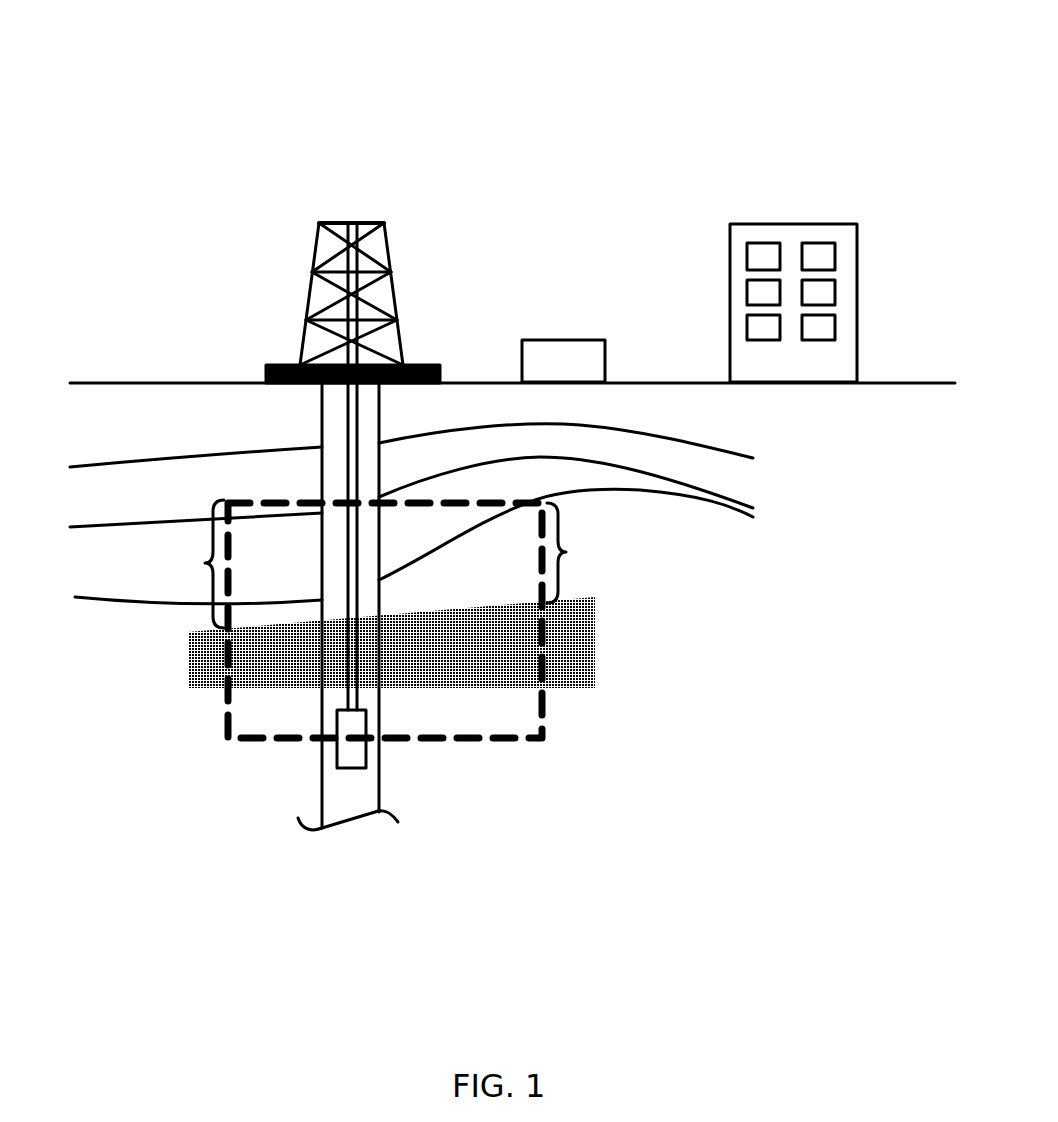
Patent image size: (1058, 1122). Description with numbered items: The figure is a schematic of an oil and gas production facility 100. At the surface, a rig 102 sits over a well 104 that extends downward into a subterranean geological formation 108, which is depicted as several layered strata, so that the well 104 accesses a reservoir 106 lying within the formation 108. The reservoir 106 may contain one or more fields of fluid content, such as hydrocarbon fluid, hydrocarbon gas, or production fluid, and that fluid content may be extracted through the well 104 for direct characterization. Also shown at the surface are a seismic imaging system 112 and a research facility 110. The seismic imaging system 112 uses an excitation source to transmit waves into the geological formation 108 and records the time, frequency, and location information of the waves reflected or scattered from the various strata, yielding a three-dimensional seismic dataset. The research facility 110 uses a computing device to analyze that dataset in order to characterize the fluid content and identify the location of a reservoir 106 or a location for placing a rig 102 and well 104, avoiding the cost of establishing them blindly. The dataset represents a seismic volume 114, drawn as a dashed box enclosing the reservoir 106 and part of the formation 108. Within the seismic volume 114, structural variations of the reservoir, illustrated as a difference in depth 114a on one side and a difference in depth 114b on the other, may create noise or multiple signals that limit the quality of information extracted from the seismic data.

The oil and gas production facility 100 is at (165, 131).
The rig 102 is at (295, 364).
The well 104 is at (322, 768).
The reservoir 106 is at (595, 657).
The geological formation 108 is at (757, 447).
The research facility 110 is at (730, 302).
The seismic imaging system 112 is at (558, 341).
The seismic volume 114 is at (545, 728).
The difference in depth 114a is at (566, 552).
The difference in depth 114b is at (205, 563).